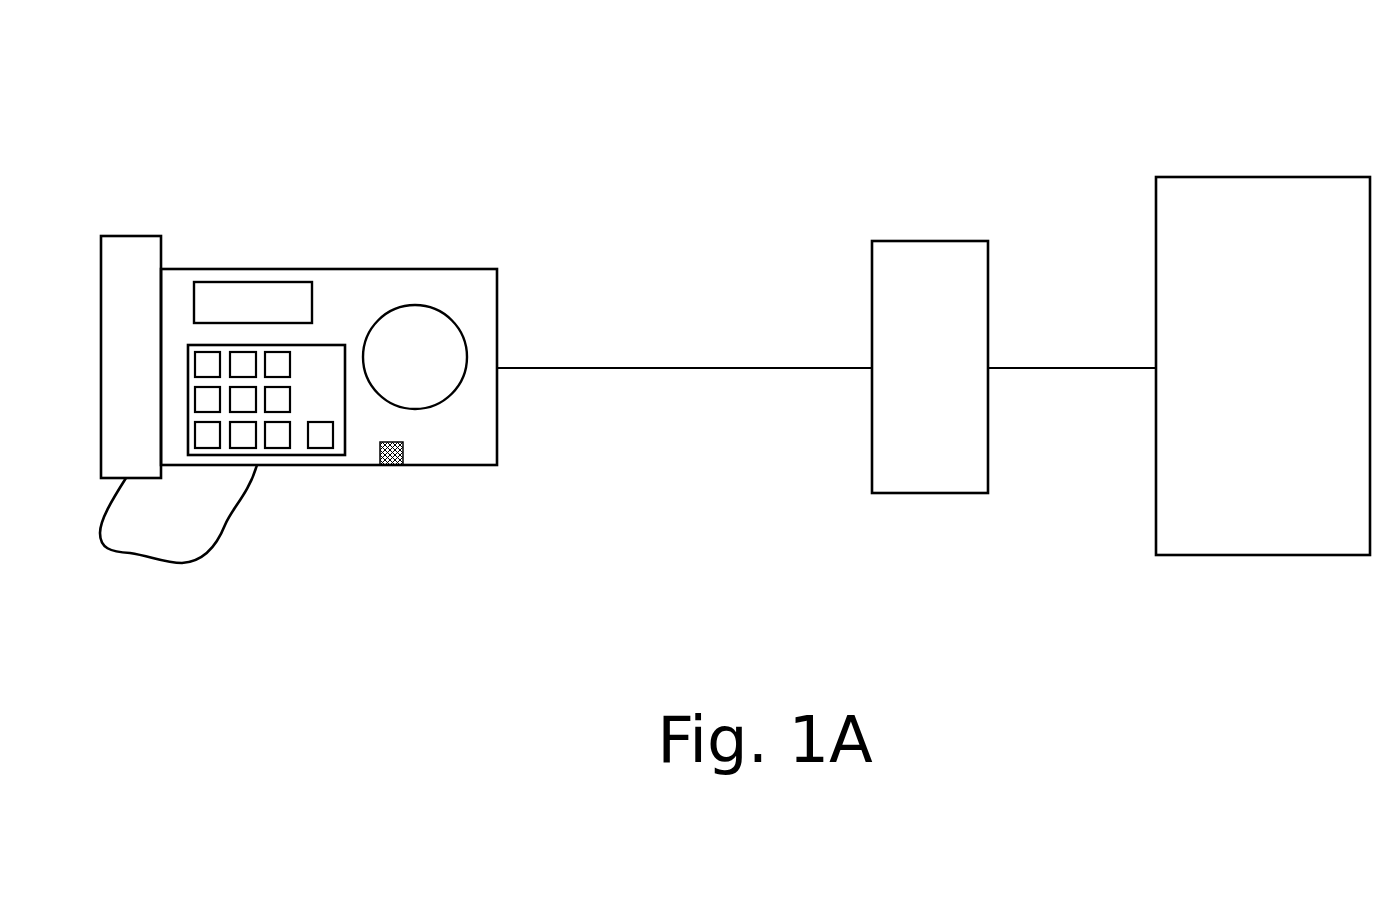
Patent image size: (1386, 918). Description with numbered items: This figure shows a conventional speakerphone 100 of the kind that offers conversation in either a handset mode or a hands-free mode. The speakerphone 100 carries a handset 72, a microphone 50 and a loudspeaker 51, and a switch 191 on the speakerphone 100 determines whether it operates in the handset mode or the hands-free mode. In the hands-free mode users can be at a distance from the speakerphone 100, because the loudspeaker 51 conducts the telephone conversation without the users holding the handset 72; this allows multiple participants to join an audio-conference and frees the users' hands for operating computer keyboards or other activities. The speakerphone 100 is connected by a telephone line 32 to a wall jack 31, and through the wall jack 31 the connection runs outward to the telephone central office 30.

The speakerphone 100 is at (300, 268).
The handset 72 is at (133, 236).
The loudspeaker 51 is at (410, 305).
The switch 191 is at (323, 455).
The microphone 50 is at (403, 452).
The telephone line 32 is at (683, 368).
The wall jack 31 is at (932, 241).
The telephone central office 30 is at (1265, 177).